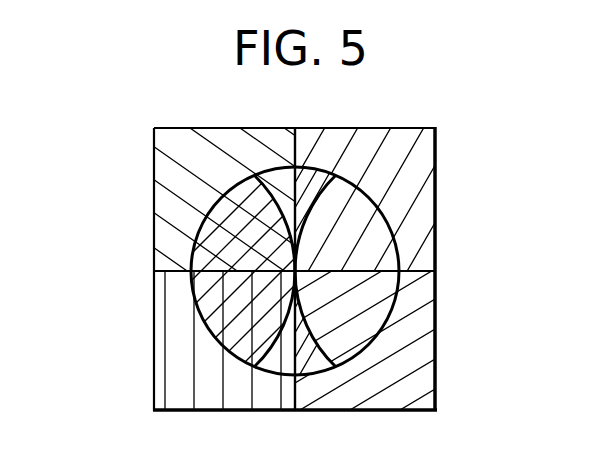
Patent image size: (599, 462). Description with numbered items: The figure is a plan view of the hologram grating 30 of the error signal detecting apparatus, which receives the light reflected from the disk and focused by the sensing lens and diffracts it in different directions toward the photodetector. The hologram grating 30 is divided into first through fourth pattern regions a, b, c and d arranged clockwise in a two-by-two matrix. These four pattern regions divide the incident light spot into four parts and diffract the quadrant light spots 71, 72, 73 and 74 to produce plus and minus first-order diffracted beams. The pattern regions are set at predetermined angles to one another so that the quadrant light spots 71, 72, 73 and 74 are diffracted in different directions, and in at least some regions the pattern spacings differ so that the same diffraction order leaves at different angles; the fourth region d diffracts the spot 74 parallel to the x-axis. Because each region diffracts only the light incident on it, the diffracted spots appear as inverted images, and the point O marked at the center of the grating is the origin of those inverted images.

The hologram grating 30 is at (118, 159).
The quadrant light spot 71 is at (196, 243).
The quadrant light spot 72 is at (394, 240).
The quadrant light spot 73 is at (384, 323).
The quadrant light spot 74 is at (198, 310).
The origin of the inverted images O is at (297, 274).